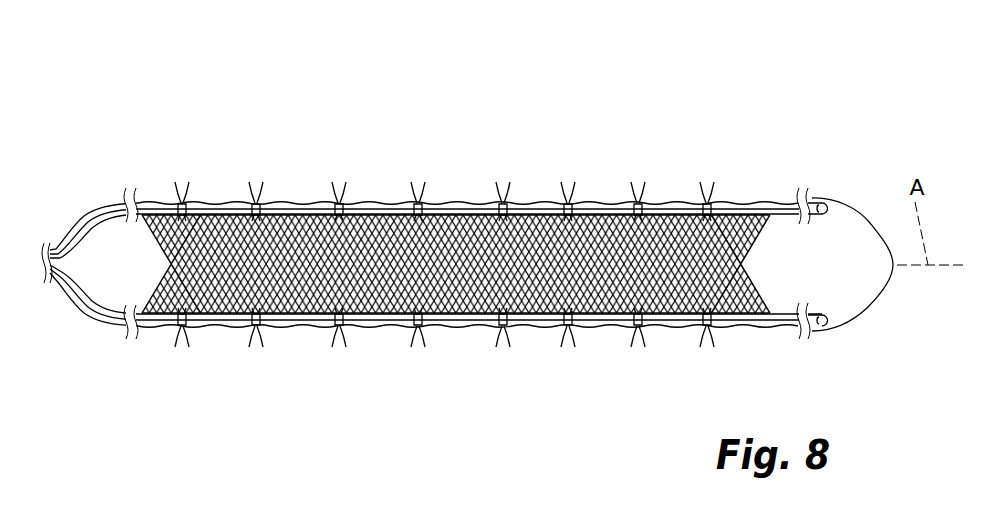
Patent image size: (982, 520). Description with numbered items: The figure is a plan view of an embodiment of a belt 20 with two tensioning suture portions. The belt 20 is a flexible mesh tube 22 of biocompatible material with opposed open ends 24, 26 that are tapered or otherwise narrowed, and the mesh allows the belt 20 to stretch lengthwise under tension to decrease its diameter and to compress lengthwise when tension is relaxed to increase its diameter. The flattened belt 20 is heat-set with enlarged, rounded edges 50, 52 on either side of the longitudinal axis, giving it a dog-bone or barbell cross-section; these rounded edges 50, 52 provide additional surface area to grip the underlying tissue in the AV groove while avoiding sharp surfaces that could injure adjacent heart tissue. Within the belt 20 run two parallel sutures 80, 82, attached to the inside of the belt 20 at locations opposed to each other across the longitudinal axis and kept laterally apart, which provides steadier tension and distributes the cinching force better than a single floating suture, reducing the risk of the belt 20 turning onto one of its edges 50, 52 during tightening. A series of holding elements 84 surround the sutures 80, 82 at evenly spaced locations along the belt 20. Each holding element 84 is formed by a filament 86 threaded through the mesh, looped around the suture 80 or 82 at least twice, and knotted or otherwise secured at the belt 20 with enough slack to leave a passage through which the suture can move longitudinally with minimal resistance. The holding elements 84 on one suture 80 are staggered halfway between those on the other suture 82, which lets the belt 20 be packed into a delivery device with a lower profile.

The belt 20 is at (294, 102).
The flexible mesh tube 22 is at (432, 269).
The open end 24 is at (68, 313).
The open end 26 is at (848, 191).
The rounded edge 50 is at (757, 327).
The rounded edge 52 is at (762, 203).
The suture 80 is at (304, 211).
The suture 82 is at (304, 320).
The holding element 84 is at (416, 172).
The filament 86 is at (250, 191).